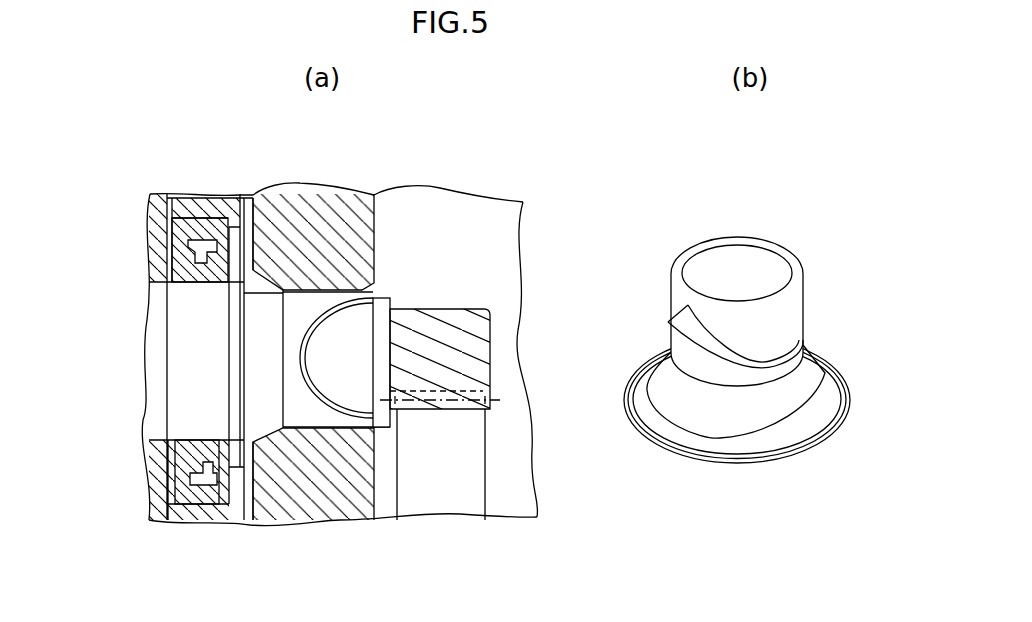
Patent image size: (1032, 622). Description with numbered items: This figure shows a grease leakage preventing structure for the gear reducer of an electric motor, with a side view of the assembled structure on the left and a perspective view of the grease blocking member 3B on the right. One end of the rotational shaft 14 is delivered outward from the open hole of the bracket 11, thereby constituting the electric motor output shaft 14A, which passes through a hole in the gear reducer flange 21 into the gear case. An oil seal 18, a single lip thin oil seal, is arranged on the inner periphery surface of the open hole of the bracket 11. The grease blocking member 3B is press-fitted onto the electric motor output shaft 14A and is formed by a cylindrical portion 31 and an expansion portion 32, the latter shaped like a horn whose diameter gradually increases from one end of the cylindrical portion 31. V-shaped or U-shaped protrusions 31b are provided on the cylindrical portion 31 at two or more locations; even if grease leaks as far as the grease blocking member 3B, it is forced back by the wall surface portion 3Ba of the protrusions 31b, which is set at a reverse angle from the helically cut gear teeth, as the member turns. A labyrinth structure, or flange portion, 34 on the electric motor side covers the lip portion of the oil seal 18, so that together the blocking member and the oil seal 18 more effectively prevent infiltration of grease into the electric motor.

The bracket 11 is at (197, 512).
The rotational shaft 14 is at (187, 358).
The electric motor output shaft 14A is at (492, 333).
The oil seal 18 is at (182, 472).
The gear reducer flange 21 is at (353, 200).
The grease blocking member 3B is at (296, 402).
The wall surface portion 3Ba is at (393, 326).
The cylindrical portion 31 is at (297, 305).
The protrusions 31b is at (330, 392).
The expansion portion 32 is at (263, 303).
The labyrinth structure (flange portion) 34 is at (222, 470).